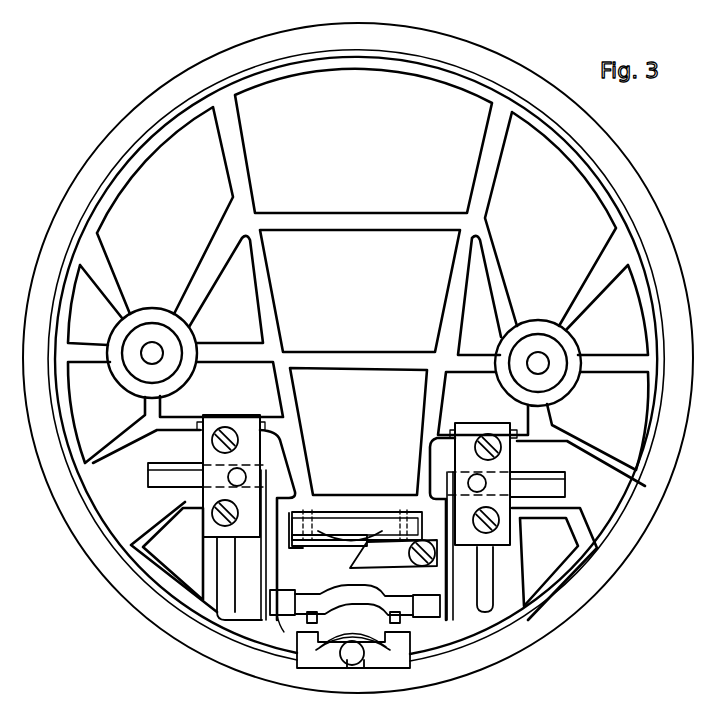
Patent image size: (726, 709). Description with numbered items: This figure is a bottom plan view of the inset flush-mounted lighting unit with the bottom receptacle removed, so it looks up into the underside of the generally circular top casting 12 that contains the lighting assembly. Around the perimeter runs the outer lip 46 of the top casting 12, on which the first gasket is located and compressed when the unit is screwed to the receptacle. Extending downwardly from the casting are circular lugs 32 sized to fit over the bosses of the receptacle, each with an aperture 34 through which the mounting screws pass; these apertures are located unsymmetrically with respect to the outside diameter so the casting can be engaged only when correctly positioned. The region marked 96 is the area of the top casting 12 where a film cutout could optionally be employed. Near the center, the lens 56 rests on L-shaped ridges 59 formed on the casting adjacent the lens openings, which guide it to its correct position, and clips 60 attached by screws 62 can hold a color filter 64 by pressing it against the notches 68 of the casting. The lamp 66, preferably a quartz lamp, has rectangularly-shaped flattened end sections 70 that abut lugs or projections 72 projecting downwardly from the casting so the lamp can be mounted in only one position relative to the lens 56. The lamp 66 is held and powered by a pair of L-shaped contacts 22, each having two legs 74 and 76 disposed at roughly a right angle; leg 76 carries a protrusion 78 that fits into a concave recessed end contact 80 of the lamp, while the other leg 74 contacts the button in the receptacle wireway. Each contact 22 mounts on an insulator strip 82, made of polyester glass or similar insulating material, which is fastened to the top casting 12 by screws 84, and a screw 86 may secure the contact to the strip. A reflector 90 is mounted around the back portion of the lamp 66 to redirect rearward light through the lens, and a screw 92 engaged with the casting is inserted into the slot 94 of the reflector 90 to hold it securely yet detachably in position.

The top casting 12 is at (163, 163).
The film cutout area 96 is at (440, 92).
The outer lip 46 is at (67, 202).
The circular lugs 32 is at (155, 310).
The aperture 34 is at (160, 352).
The contacts 22 is at (176, 481).
The leg 74 is at (176, 467).
The insulator strip 82 is at (208, 531).
The screws 84 is at (489, 438).
The screw 86 is at (240, 472).
The leg 76 is at (260, 566).
The protrusion 78 is at (265, 620).
The L-shaped ridges 59 is at (402, 512).
The lens 56 is at (352, 533).
The notches 68 is at (303, 543).
The color filter 64 is at (326, 550).
The clips 60 is at (392, 560).
The screws 62 is at (426, 562).
The flattened end sections 70 is at (306, 603).
The lamp 66 is at (352, 591).
The lugs or projections 72 is at (310, 625).
The recessed end contacts 80 is at (282, 610).
The reflector 90 is at (313, 653).
The slot 94 is at (352, 664).
The screw 92 is at (357, 664).